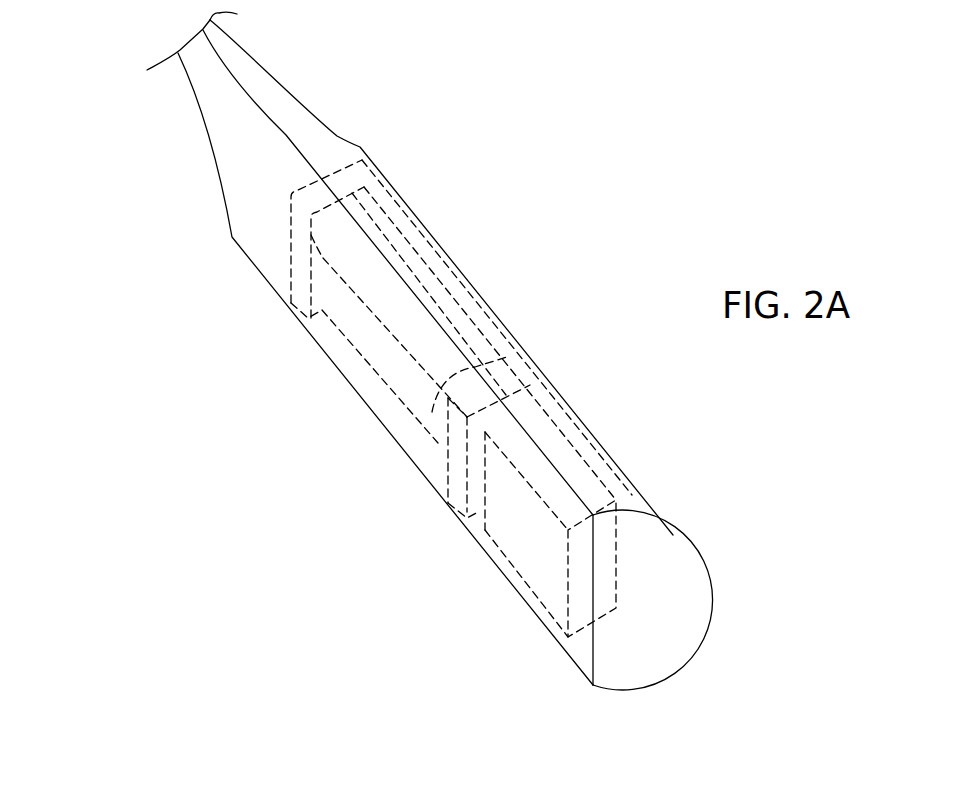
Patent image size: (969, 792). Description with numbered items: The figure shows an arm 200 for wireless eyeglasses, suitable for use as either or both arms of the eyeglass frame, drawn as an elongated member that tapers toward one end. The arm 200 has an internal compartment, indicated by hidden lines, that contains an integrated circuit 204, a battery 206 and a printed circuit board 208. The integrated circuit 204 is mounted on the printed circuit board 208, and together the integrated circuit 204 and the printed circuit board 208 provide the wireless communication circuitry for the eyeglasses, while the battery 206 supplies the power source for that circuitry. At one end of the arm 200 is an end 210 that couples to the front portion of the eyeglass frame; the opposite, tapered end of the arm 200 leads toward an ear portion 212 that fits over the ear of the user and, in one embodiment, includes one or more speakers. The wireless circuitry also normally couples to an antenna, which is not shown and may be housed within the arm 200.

The arm 200 is at (309, 130).
The integrated circuit (IC) 204 is at (530, 542).
The battery 206 is at (405, 378).
The printed circuit board (PCB) 208 is at (448, 265).
The end 210 is at (673, 622).
The ear portion 212 is at (155, 98).